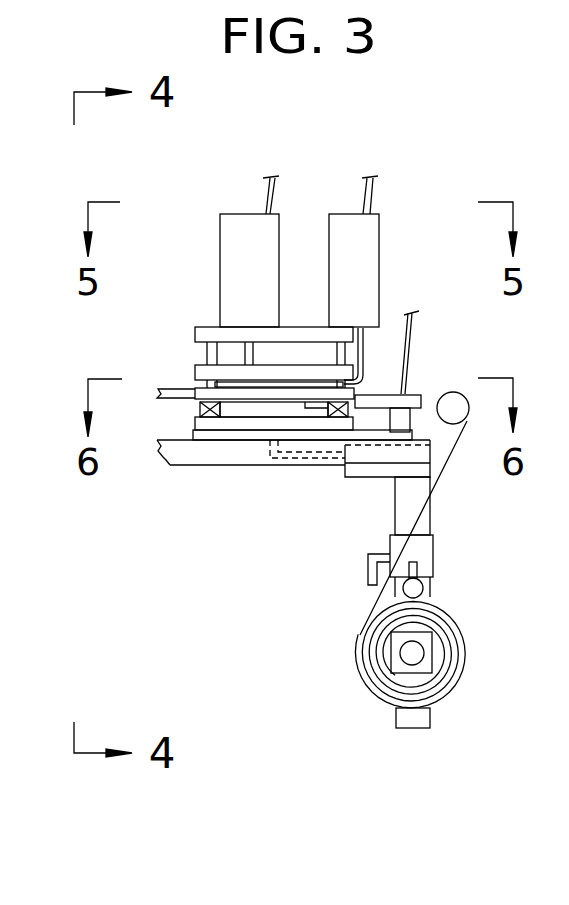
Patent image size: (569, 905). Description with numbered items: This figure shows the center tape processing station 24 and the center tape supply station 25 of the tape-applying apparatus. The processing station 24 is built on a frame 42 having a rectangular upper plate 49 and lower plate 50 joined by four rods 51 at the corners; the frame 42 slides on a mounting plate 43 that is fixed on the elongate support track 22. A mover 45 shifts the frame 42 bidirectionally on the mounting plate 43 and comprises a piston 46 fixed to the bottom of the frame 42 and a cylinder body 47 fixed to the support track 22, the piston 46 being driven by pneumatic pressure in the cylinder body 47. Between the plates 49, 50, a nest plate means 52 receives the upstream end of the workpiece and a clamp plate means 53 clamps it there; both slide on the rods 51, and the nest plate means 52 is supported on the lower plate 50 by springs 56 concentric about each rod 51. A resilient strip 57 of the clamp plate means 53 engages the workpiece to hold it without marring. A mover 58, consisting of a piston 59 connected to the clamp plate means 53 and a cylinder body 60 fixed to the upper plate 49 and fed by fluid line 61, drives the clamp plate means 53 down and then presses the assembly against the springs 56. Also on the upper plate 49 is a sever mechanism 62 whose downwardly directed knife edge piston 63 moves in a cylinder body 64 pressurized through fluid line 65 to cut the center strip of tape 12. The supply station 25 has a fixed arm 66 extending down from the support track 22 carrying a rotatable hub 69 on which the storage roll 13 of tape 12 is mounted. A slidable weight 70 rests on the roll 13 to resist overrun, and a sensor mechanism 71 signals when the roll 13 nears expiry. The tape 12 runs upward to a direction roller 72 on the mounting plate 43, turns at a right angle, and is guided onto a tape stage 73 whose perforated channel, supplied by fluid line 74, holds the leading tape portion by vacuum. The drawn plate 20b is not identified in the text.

The center tape processing station 24 is at (393, 130).
The mover 58 is at (250, 195).
The cylinder body 60 is at (233, 220).
The fluid line 61 is at (275, 198).
The sever mechanism 62 is at (337, 195).
The cylinder body 64 is at (373, 228).
The fluid line 65 is at (376, 189).
The knife edge piston 63 is at (363, 338).
The frame 42 is at (208, 308).
The rods 51 is at (199, 348).
The upper plate 49 is at (317, 340).
The piston 59 is at (250, 355).
The clamp plate means 53 is at (198, 366).
The resilient strip 57 is at (360, 383).
The mounting plate 20b is at (190, 389).
The nest plate means 52 is at (197, 406).
The springs 56 is at (198, 415).
The lower plate 50 is at (250, 424).
The mounting plate 43 is at (208, 441).
The support track 22 is at (185, 466).
The piston 46 is at (320, 462).
The mover 45 is at (336, 492).
The cylinder body 47 is at (380, 478).
The tape stage 73 is at (410, 397).
The fluid line 74 is at (409, 328).
The direction roller 72 is at (457, 403).
The slidable weight 70 is at (430, 563).
The sensor mechanism 71 is at (346, 568).
The center tape supply station 25 is at (330, 787).
The center strip of adhesive tape 12 is at (375, 598).
The storage roll 13 is at (397, 676).
The rotatable hub 69 is at (403, 668).
The fixed arm 66 is at (414, 728).